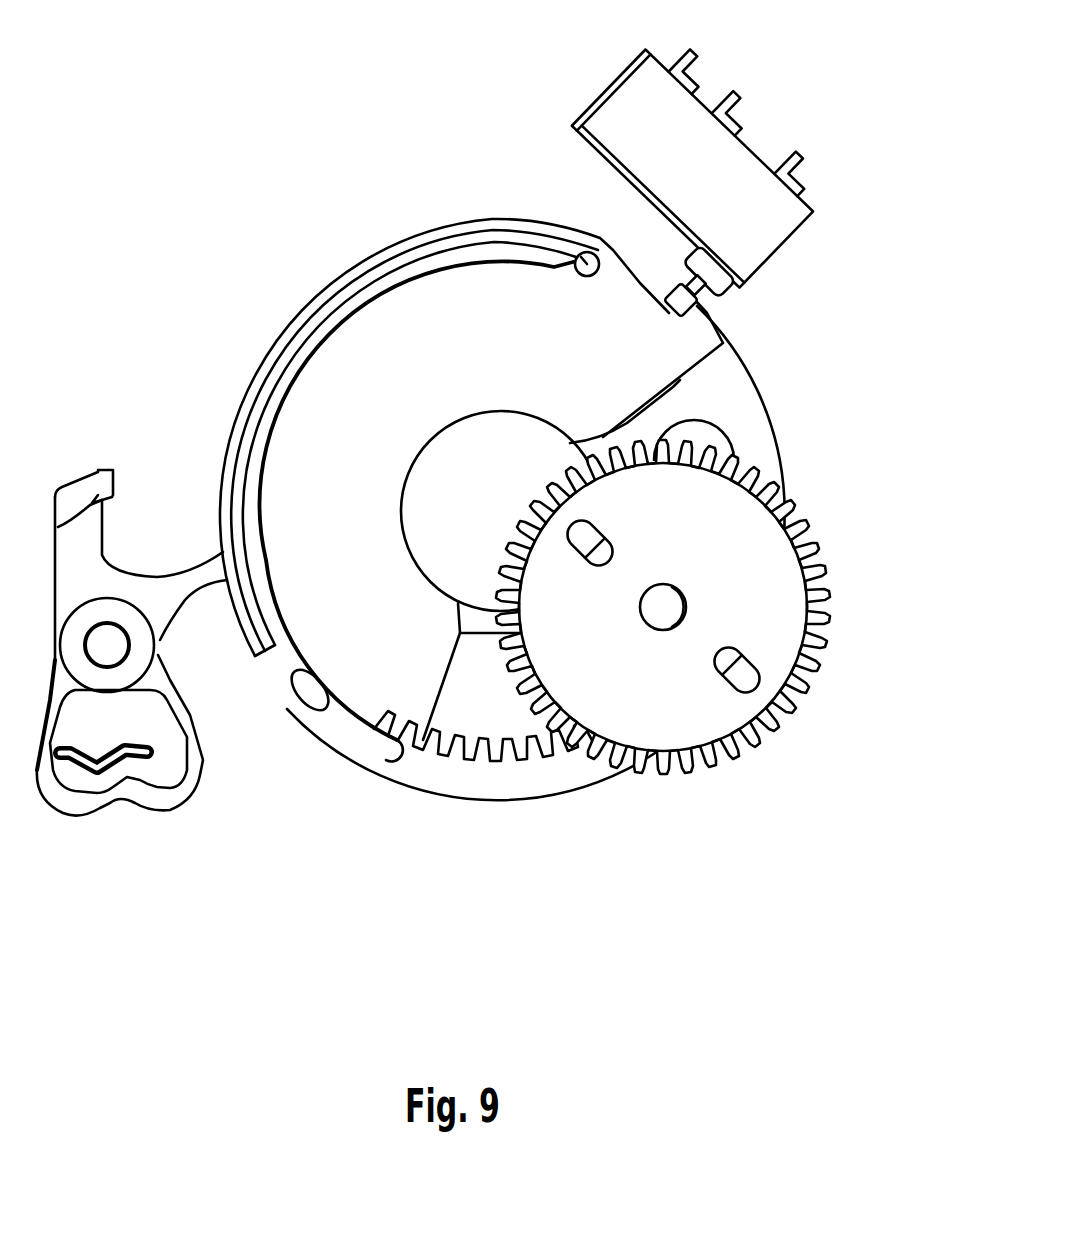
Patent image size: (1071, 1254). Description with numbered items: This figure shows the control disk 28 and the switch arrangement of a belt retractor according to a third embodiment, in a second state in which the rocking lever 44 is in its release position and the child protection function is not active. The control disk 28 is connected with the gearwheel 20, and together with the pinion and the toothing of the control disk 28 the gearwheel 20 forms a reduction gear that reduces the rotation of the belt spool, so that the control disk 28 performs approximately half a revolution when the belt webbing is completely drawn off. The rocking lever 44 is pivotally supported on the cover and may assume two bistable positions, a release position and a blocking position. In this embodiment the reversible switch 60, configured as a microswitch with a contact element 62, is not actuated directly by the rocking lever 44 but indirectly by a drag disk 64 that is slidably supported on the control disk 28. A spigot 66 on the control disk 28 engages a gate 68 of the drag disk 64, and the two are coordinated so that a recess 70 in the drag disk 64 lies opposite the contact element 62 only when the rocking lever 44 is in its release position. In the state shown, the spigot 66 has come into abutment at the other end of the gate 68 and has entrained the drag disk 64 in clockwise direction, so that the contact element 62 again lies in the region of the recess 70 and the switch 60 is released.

The gearwheel 20 is at (770, 555).
The control disk 28 is at (527, 778).
The rocking lever 44 is at (143, 638).
The reversible switch 60 is at (690, 120).
The contact element 62 is at (683, 297).
The drag disk 64 is at (402, 667).
The spigot 66 is at (578, 255).
The gate 68 is at (357, 730).
The recess 70 is at (650, 290).